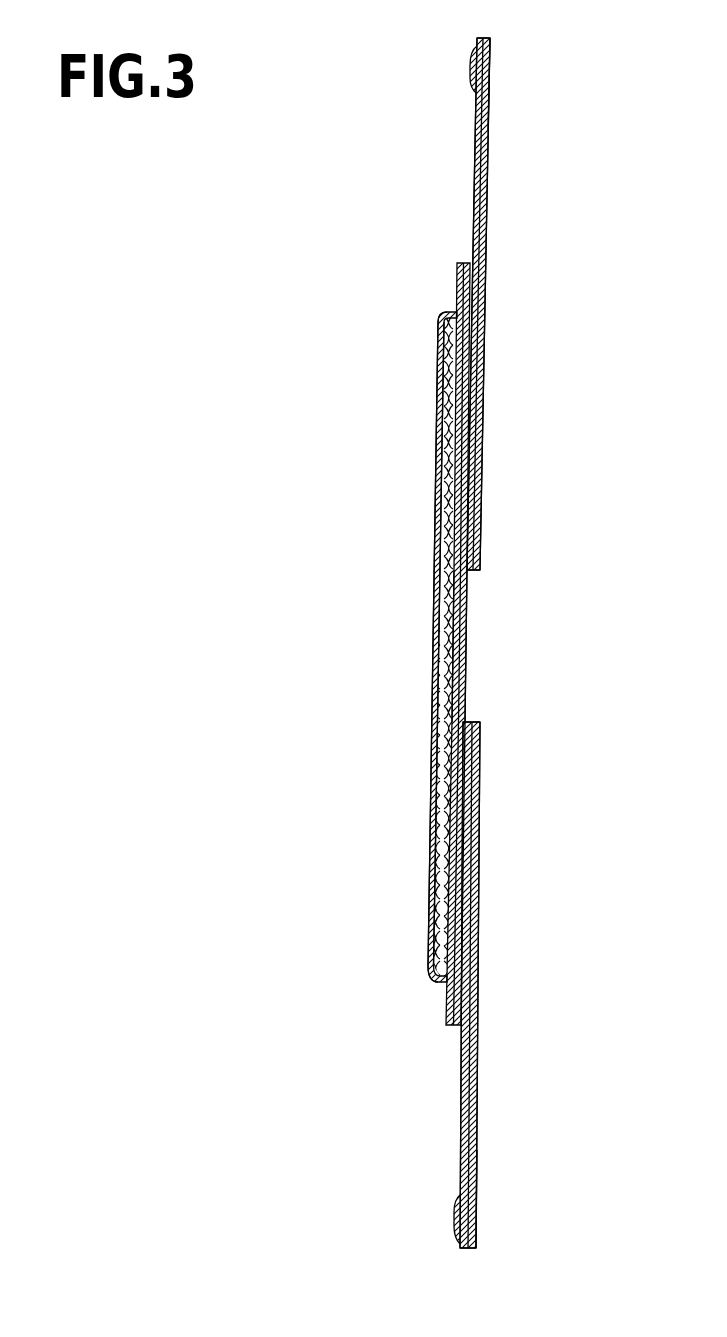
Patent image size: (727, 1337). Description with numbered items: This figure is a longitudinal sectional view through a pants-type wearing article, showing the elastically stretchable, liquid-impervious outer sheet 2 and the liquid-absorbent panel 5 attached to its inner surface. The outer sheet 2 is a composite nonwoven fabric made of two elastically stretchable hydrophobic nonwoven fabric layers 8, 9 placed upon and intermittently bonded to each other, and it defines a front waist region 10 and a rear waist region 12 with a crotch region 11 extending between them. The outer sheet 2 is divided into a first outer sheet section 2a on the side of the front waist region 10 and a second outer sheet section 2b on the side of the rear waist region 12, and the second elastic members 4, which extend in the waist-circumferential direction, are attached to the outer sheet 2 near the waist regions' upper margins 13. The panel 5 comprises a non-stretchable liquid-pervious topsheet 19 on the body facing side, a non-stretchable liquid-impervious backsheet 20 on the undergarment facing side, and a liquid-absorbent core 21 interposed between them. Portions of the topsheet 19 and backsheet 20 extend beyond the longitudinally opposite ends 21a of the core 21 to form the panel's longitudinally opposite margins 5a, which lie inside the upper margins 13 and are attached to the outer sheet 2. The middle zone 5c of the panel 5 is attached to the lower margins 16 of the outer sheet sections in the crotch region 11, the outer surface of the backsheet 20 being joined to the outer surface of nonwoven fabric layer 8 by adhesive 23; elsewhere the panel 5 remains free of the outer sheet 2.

The outer sheet 2 is at (513, 643).
The first outer sheet section 2a is at (478, 1168).
The second outer sheet section 2b is at (489, 176).
The second elastic members 4 is at (475, 80).
The liquid-absorbent panel 5 is at (440, 322).
The longitudinally opposite margins 5a is at (457, 285).
The middle zone 5c is at (436, 586).
The nonwoven fabric layer 8 is at (477, 203).
The nonwoven fabric layer 9 is at (489, 222).
The front waist region 10 is at (478, 1128).
The crotch region 11 is at (434, 662).
The rear waist region 12 is at (478, 136).
The waist regions' upper margins 13 is at (490, 100).
The lower margins 16 is at (482, 562).
The topsheet 19 is at (437, 463).
The backsheet 20 is at (466, 615).
The liquid-absorbent core 21 is at (466, 664).
The longitudinally opposite ends 21a is at (440, 338).
The adhesive 23 is at (470, 285).